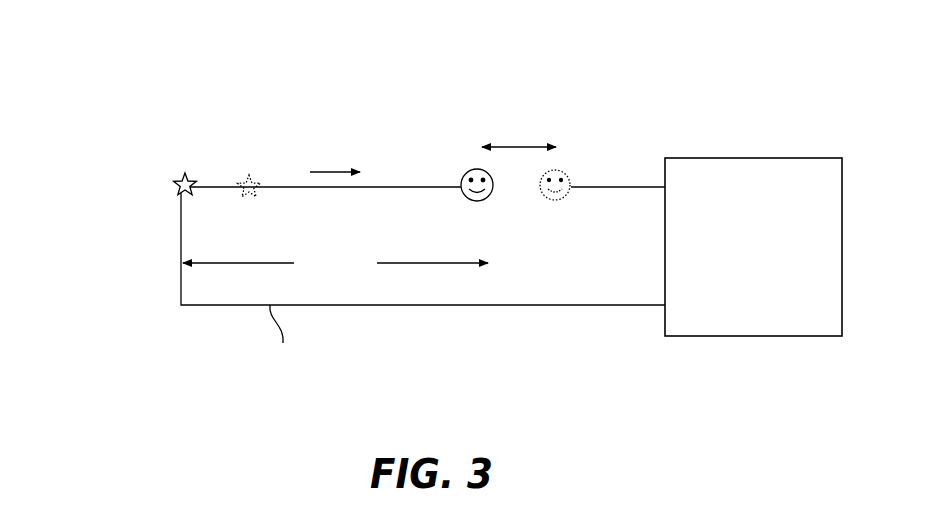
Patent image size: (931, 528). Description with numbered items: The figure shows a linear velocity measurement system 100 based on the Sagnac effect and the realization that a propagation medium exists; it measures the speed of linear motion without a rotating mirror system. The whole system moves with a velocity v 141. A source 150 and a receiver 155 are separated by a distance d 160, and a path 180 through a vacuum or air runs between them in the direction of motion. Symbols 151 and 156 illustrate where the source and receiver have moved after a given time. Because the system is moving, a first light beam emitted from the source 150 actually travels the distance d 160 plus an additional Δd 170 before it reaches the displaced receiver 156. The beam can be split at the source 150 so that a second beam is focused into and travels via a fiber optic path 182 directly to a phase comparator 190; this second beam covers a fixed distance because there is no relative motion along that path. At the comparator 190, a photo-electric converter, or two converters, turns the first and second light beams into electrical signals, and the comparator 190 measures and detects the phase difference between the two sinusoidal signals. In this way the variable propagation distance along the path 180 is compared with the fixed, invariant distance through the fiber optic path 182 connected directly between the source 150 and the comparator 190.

The linear velocity measurement system 100 is at (150, 368).
The velocity v 141 is at (325, 78).
The source 150 is at (193, 178).
The symbol illustrating movement of the source 151 is at (256, 179).
The receiver 155 is at (481, 201).
The symbol illustrating movement of the receiver 156 is at (557, 201).
The distance d 160 is at (405, 263).
The Δd 170 is at (522, 145).
The path 180 is at (396, 186).
The fiber optic path 182 is at (523, 305).
The phase comparator 190 is at (737, 312).